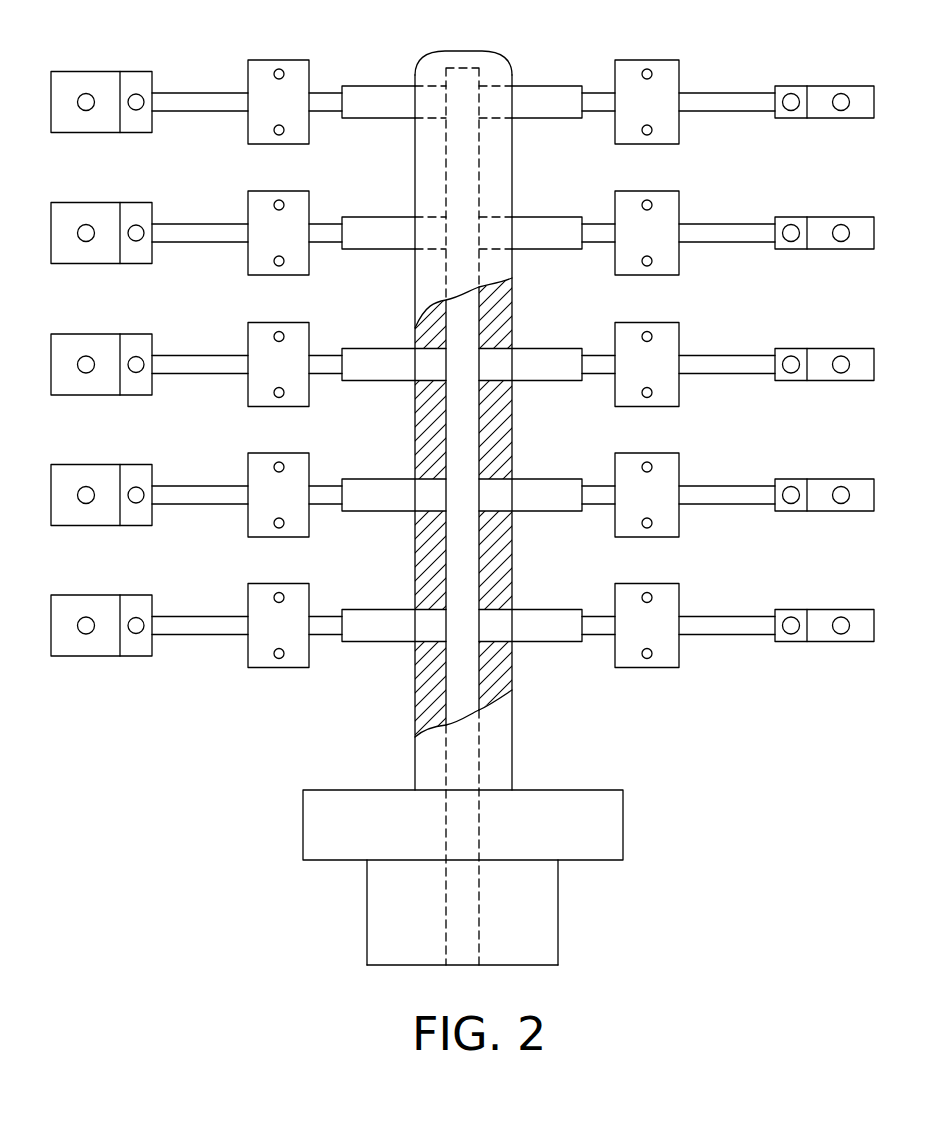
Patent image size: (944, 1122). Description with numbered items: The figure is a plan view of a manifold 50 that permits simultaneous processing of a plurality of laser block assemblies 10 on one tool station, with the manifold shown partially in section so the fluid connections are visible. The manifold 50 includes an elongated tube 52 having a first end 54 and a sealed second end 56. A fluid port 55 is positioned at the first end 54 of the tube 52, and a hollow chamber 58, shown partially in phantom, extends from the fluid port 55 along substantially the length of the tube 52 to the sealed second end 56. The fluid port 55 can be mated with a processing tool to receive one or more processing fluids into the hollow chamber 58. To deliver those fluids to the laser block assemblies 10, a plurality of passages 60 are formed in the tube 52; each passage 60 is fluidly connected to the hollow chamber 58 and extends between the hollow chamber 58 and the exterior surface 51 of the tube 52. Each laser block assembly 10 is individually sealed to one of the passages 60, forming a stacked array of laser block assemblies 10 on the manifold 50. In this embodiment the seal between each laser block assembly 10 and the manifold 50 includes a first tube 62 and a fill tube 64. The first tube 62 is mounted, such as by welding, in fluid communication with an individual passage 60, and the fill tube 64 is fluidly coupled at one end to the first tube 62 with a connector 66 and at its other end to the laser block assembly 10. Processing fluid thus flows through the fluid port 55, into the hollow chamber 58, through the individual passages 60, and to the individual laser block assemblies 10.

The laser block assembly 10 is at (858, 381).
The manifold 50 is at (238, 756).
The exterior surface 51 is at (512, 750).
The elongated tube 52 is at (488, 70).
The first end 54 is at (543, 950).
The fluid port 55 is at (390, 965).
The sealed second end 56 is at (430, 57).
The hollow chamber 58 is at (457, 680).
The passage 60 is at (493, 485).
The first tube 62 is at (560, 485).
The fill tube 64 is at (727, 497).
The connector 66 is at (670, 462).